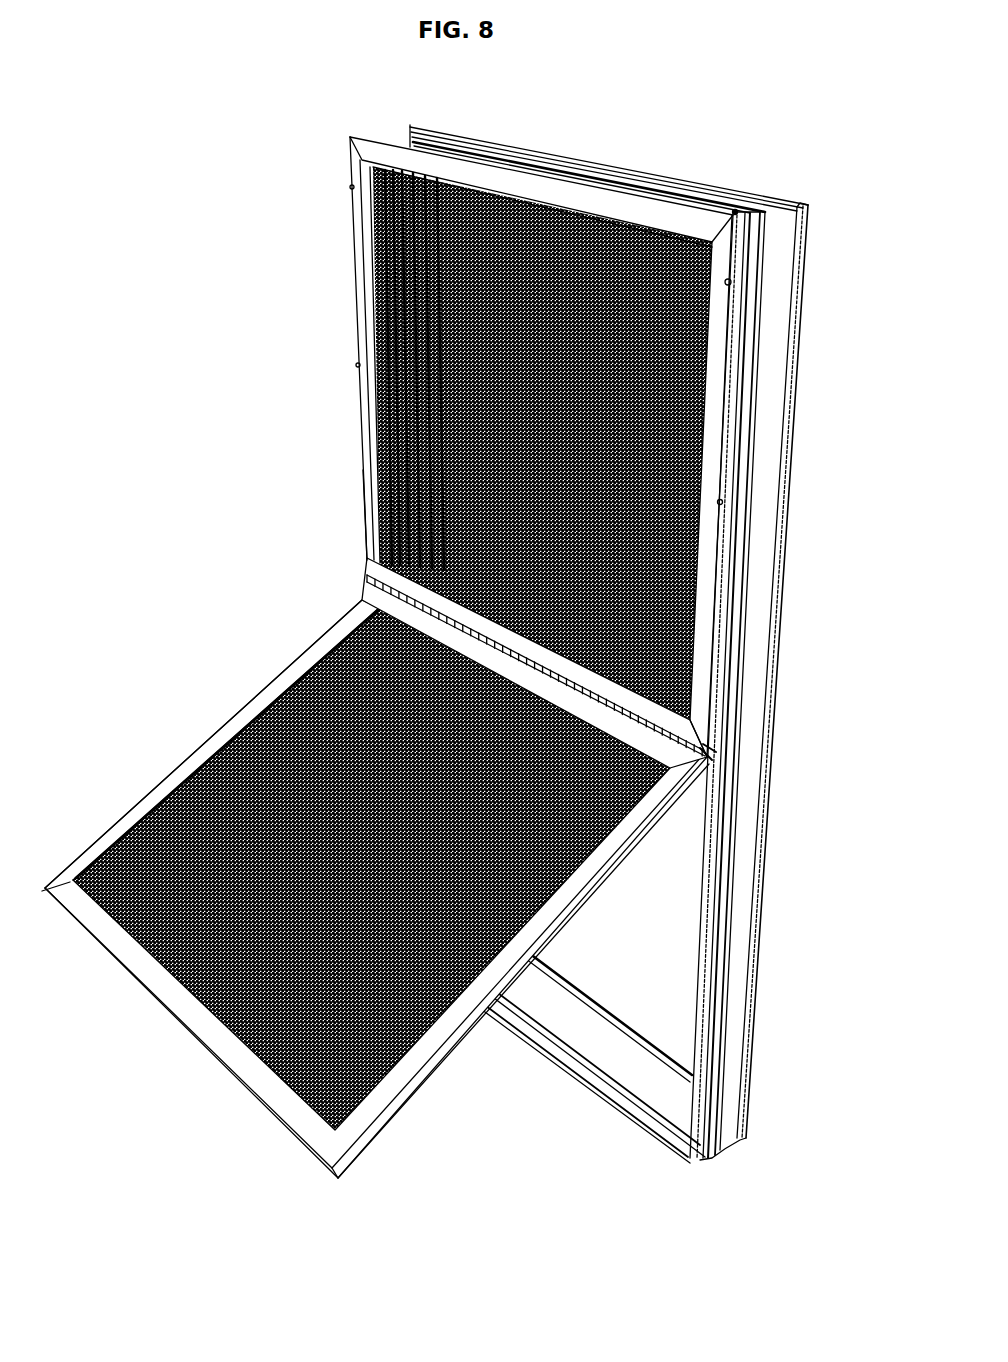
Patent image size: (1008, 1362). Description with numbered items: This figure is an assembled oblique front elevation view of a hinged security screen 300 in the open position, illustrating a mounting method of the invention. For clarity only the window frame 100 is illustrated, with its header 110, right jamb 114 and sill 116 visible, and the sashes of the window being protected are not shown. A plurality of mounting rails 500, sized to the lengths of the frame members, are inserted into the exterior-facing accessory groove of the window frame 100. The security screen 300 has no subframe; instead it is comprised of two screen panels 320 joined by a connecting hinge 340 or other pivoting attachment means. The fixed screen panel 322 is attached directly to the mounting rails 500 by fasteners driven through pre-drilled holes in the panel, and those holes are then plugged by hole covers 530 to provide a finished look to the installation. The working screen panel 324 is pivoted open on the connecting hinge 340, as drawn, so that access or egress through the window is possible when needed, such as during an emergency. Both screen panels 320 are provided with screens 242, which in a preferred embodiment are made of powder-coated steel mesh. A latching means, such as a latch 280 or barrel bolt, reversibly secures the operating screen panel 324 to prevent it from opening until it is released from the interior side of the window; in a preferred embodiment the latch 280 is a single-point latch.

The window frame 100 is at (647, 667).
The header 110 is at (585, 162).
The right jamb 114 is at (783, 588).
The sill 116 is at (598, 1005).
The screens 242 is at (690, 358).
The latch 280 is at (375, 865).
The security screen 300 is at (491, 419).
The screen panels 320 is at (447, 619).
The fixed screen panel 322 is at (362, 492).
The working screen panel 324 is at (332, 610).
The connecting hinge 340 is at (707, 753).
The mounting rails 500 is at (735, 212).
The hole covers 530 is at (352, 187).